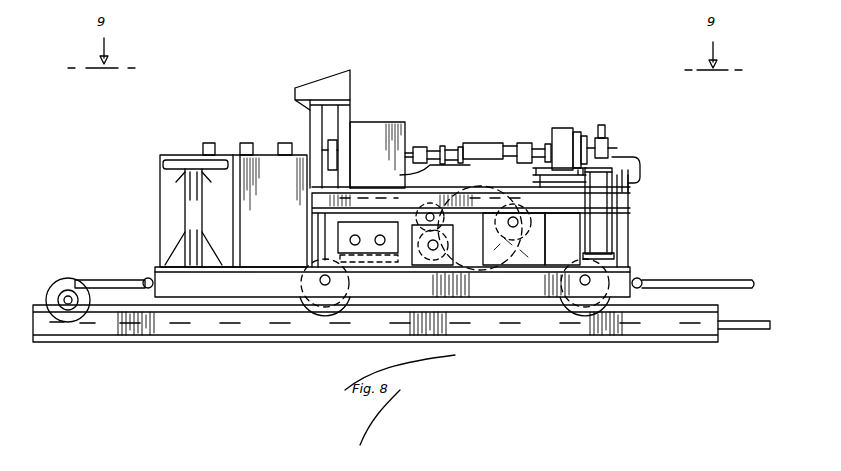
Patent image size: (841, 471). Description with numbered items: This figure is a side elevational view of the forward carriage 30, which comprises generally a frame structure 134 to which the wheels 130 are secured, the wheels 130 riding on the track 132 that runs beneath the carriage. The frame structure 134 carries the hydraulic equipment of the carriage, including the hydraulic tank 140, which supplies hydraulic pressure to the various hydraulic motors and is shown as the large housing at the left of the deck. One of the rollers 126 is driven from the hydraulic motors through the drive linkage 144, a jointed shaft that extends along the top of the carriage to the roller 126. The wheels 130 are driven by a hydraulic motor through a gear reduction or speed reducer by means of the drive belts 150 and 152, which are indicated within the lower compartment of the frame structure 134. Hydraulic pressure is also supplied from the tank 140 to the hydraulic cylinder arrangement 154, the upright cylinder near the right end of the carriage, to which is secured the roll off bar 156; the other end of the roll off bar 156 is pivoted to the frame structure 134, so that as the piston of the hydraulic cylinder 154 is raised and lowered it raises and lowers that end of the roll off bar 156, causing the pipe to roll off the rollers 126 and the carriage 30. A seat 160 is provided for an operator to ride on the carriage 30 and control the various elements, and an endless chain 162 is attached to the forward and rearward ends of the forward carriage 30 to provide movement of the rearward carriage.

The forward carriage 30 is at (642, 231).
The roller 126 is at (560, 128).
The wheels 130 is at (325, 300).
The track 132 is at (582, 323).
The frame structure 134 is at (232, 283).
The hydraulic tank 140 is at (233, 205).
The drive linkage 144 is at (490, 143).
The drive belt 150 is at (492, 260).
The drive belt 152 is at (584, 255).
The hydraulic cylinder arrangement 154 is at (606, 204).
The roll off bar 156 is at (606, 136).
The seat 160 is at (160, 165).
The endless chain 162 is at (106, 279).